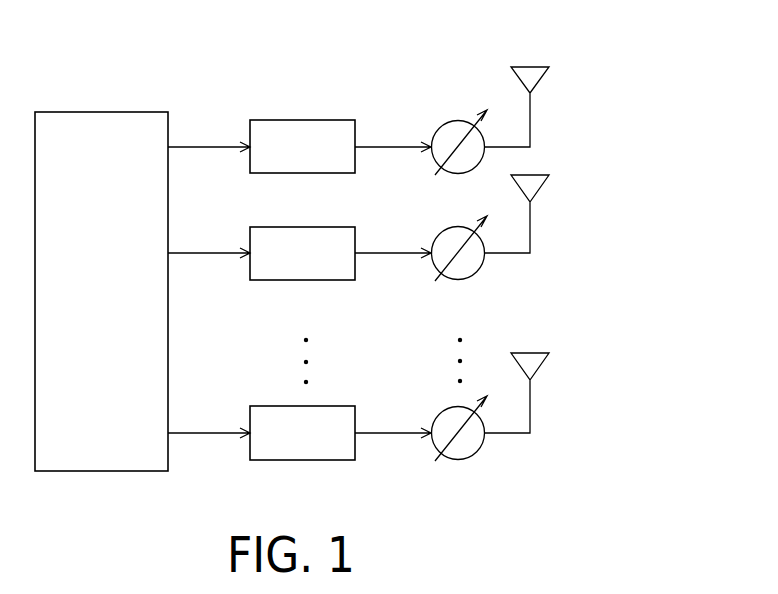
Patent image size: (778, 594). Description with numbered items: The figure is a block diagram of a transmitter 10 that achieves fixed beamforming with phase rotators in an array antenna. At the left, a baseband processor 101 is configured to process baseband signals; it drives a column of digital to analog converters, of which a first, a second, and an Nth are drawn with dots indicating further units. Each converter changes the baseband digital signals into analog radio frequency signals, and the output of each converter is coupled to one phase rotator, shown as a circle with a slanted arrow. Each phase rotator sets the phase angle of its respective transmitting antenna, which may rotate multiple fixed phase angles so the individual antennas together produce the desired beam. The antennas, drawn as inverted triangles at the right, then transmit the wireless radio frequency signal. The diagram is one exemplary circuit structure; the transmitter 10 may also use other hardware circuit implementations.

The transmitter 10 is at (693, 28).
The baseband processor 101 is at (101, 112).